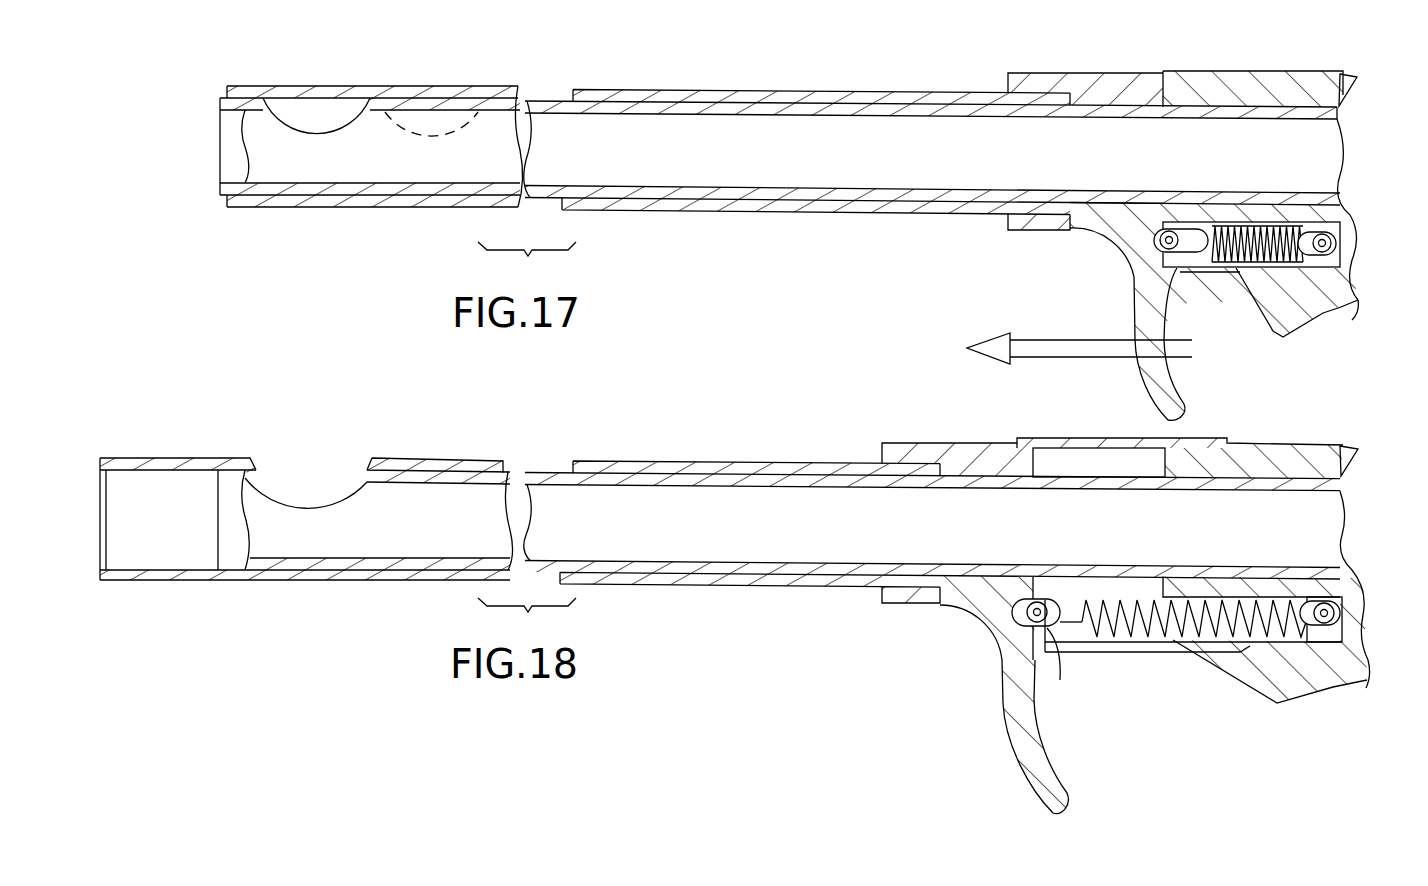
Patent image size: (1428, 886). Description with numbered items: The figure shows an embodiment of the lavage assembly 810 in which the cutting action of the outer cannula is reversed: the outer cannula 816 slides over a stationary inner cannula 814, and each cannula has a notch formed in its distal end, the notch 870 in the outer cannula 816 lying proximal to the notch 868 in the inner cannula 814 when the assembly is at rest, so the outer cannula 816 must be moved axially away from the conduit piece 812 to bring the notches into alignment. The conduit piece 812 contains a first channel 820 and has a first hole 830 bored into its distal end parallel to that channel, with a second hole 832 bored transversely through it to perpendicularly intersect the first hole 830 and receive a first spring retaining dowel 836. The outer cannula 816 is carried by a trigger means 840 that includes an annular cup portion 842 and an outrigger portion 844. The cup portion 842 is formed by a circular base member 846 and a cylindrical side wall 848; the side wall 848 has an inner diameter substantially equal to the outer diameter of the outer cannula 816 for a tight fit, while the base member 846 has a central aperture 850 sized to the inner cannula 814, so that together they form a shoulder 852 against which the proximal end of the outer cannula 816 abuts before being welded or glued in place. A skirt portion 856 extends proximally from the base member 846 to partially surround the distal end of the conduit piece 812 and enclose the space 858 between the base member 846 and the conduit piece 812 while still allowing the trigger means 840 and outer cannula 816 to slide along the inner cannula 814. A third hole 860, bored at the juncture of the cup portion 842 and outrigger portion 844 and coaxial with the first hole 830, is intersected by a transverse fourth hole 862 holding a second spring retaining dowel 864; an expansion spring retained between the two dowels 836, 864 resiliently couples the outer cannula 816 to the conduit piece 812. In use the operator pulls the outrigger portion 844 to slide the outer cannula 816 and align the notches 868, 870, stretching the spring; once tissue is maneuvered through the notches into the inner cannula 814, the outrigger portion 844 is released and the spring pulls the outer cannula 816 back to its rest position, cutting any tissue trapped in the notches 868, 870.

In FIG. 17, the lavage assembly 810 is at (1170, 59).
In FIG. 18, the lavage assembly 810 is at (260, 470).
In FIG. 17, the conduit piece 812 is at (1320, 68).
In FIG. 18, the conduit piece 812 is at (1349, 461).
In FIG. 17, the inner cannula 814 is at (670, 115).
In FIG. 18, the inner cannula 814 is at (636, 488).
In FIG. 17, the outer cannula 816 is at (705, 90).
In FIG. 18, the outer cannula 816 is at (670, 463).
In FIG. 17, the first channel 820 is at (1345, 190).
In FIG. 18, the first channel 820 is at (1345, 548).
In FIG. 17, the first hole 830 is at (1195, 232).
In FIG. 18, the first hole 830 is at (1207, 599).
In FIG. 17, the second hole 832 is at (1272, 270).
In FIG. 18, the second hole 832 is at (1307, 597).
In FIG. 17, the first spring retaining dowel 836 is at (1317, 240).
In FIG. 18, the first spring retaining dowel 836 is at (1343, 622).
In FIG. 17, the trigger means 840 is at (1190, 312).
In FIG. 18, the trigger means 840 is at (983, 716).
In FIG. 17, the annular cup portion 842 is at (1040, 68).
In FIG. 18, the annular cup portion 842 is at (930, 439).
In FIG. 17, the outrigger portion 844 is at (1112, 362).
In FIG. 18, the outrigger portion 844 is at (1007, 745).
In FIG. 17, the circular base member 846 is at (1102, 98).
In FIG. 18, the circular base member 846 is at (983, 465).
In FIG. 17, the cylindrical side wall 848 is at (1042, 230).
In FIG. 18, the cylindrical side wall 848 is at (890, 607).
In FIG. 17, the central aperture 850 is at (1100, 200).
In FIG. 18, the central aperture 850 is at (942, 578).
In FIG. 17, the shoulder 852 is at (1055, 100).
In FIG. 18, the shoulder 852 is at (915, 478).
In FIG. 17, the skirt portion 856 is at (1225, 68).
In FIG. 18, the skirt portion 856 is at (1090, 438).
In FIG. 18, the space 858 is at (1087, 467).
In FIG. 18, the third hole 860 is at (1040, 606).
In FIG. 18, the fourth hole 862 is at (1058, 652).
In FIG. 18, the second spring retaining dowel 864 is at (1017, 630).
In FIG. 17, the notch 868 is at (322, 125).
In FIG. 18, the notch 868 is at (262, 482).
In FIG. 17, the notch 870 is at (377, 92).